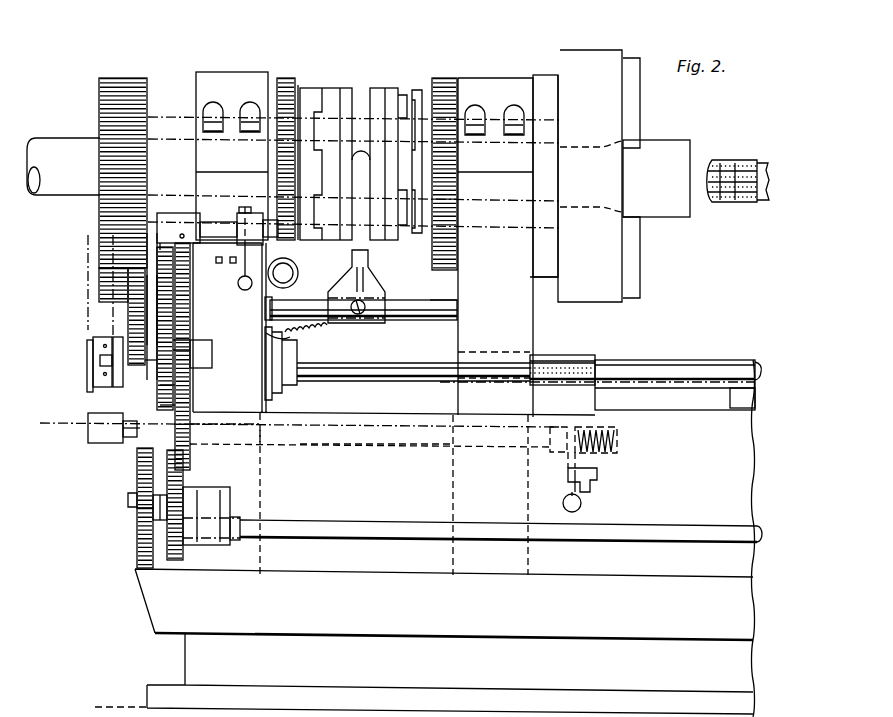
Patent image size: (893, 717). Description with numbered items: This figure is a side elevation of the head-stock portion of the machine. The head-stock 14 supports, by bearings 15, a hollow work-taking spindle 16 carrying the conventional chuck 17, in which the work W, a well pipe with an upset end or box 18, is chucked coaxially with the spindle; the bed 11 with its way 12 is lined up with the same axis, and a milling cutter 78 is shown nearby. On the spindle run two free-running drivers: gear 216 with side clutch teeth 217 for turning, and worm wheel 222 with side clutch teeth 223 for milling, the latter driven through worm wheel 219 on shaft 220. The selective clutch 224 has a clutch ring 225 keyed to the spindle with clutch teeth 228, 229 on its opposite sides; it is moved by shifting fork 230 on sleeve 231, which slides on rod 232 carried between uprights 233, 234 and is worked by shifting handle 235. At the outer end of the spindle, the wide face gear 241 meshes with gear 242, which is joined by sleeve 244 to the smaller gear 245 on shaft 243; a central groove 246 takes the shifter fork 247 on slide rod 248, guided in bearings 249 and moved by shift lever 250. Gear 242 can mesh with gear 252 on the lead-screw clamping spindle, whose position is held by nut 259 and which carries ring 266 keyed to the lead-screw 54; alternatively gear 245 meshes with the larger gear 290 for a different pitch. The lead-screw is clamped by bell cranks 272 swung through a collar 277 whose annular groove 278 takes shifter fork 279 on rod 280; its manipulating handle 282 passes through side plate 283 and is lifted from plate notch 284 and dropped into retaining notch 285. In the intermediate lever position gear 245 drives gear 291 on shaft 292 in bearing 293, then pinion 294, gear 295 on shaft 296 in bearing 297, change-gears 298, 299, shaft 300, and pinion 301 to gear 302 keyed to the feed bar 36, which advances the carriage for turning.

The work W is at (62, 150).
The bed 11 is at (720, 364).
The way 12 is at (734, 372).
The head-stock 14 is at (480, 60).
The bearings 15 is at (227, 80).
The work-taking spindle 16 is at (178, 115).
The chuck 17 is at (640, 60).
The upset end or box 18 is at (658, 147).
The feed bar 36 is at (387, 545).
The lead-screw 54 is at (565, 358).
The milling cutter 78 is at (722, 162).
The gear 216 is at (446, 78).
The side clutch teeth 217 is at (418, 90).
The worm wheel 219 is at (318, 326).
The shaft 220 is at (290, 271).
The worm wheel 222 is at (284, 80).
The side clutch teeth 223 is at (320, 97).
The selective clutch 224 is at (347, 86).
The clutch ring 225 is at (340, 95).
The clutch teeth 228 is at (406, 100).
The clutch teeth 229 is at (347, 88).
The shifting fork 230 is at (360, 258).
The sleeve 231 is at (378, 321).
The rod 232 is at (442, 303).
The upright 233 is at (264, 437).
The upright 234 is at (465, 405).
The shifting handle 235 is at (360, 312).
The wide face gear 241 is at (126, 77).
The gear 242 is at (98, 265).
The shaft 243 is at (134, 283).
The sleeve 244 is at (155, 291).
The gear 245 is at (186, 297).
The central groove 246 is at (163, 303).
The shifter fork 247 is at (163, 233).
The slide rod 248 is at (213, 222).
The bearings 249 is at (202, 216).
The shift lever 250 is at (238, 280).
The gear 252 is at (155, 388).
The nut 259 is at (267, 399).
The ring 266 is at (302, 365).
The bell crank 272 is at (104, 364).
The collar 277 is at (96, 355).
The annular groove 278 is at (94, 342).
The shifter fork 279 is at (147, 377).
The rod 280 is at (356, 436).
The manipulating handle 282 is at (568, 480).
The side plate 283 is at (732, 484).
The plate notch 284 is at (583, 503).
The retaining notch 285 is at (597, 480).
The gear 290 is at (157, 400).
The gear 291 is at (170, 388).
The shaft 292 is at (162, 355).
The bearing 293 is at (205, 355).
The pinion 294 is at (180, 344).
The gear 295 is at (175, 402).
The shaft 296 is at (137, 472).
The bearing 297 is at (262, 405).
The change-gear 298 is at (147, 432).
The change-gear 299 is at (138, 543).
The shaft 300 is at (152, 516).
The pinion 301 is at (185, 484).
The gear 302 is at (182, 552).